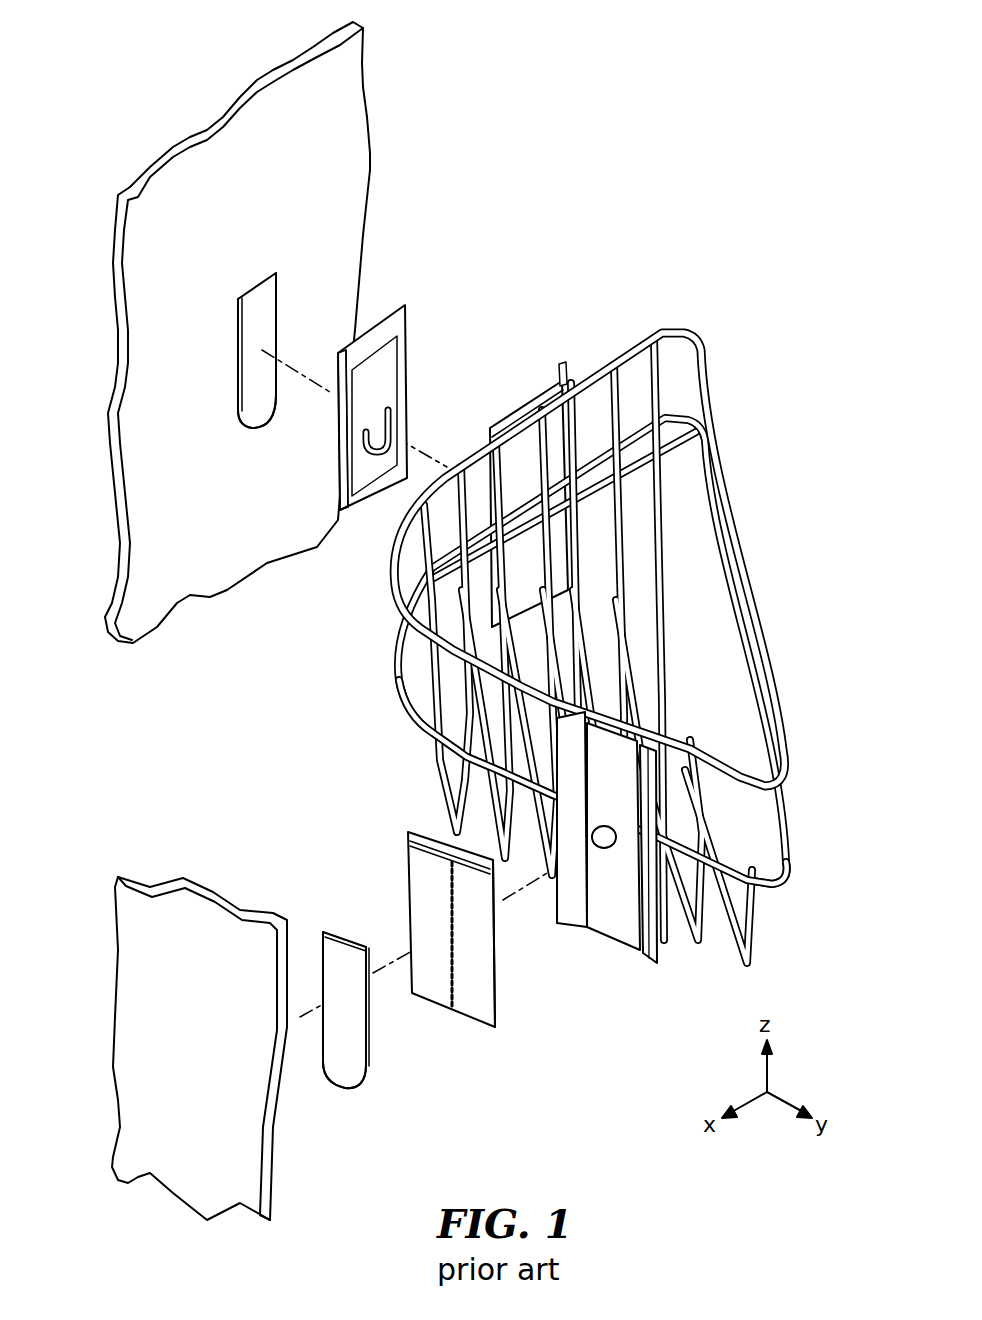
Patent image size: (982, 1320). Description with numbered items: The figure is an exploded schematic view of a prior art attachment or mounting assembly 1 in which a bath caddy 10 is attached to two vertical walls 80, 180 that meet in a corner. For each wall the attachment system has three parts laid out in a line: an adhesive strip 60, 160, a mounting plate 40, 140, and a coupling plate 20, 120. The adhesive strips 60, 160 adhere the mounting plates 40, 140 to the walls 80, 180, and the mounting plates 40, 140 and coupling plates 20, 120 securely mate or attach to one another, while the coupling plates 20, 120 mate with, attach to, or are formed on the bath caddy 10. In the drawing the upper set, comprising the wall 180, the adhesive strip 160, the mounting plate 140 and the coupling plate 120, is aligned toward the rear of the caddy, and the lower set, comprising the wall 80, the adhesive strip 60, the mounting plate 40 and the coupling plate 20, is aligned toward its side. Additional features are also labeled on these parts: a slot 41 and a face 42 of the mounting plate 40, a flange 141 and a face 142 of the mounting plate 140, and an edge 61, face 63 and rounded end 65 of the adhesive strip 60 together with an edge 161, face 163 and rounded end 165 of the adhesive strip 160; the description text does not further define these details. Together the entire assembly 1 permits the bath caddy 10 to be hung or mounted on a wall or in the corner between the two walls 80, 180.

The attachment or mounting assembly 1 is at (423, 621).
The bath caddy 10 is at (393, 598).
The coupling plate 20 is at (622, 943).
The mounting plate 40 is at (423, 828).
The slot 41 is at (414, 871).
The plate face 42 is at (500, 938).
The adhesive strip 60 is at (328, 932).
The tab edge 61 is at (368, 1008).
The tab face 63 is at (352, 1043).
The rounded end 65 is at (345, 1072).
The vertical wall 80 is at (143, 938).
The coupling plate 120 is at (547, 393).
The mounting plate 140 is at (387, 312).
The holder flange 141 is at (338, 475).
The holder face 142 is at (396, 348).
The adhesive strip 160 is at (258, 283).
The tab edge 161 is at (269, 322).
The tab face 163 is at (238, 379).
The rounded end 165 is at (253, 415).
The vertical wall 180 is at (333, 115).